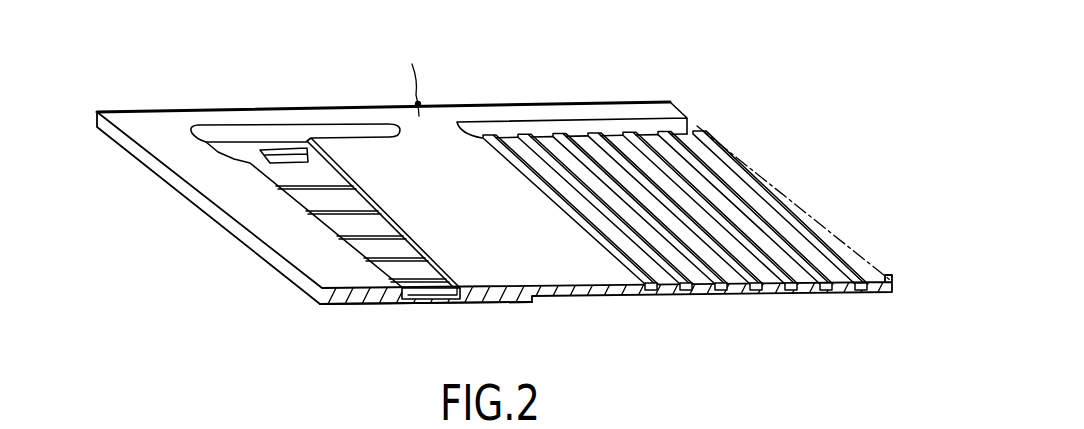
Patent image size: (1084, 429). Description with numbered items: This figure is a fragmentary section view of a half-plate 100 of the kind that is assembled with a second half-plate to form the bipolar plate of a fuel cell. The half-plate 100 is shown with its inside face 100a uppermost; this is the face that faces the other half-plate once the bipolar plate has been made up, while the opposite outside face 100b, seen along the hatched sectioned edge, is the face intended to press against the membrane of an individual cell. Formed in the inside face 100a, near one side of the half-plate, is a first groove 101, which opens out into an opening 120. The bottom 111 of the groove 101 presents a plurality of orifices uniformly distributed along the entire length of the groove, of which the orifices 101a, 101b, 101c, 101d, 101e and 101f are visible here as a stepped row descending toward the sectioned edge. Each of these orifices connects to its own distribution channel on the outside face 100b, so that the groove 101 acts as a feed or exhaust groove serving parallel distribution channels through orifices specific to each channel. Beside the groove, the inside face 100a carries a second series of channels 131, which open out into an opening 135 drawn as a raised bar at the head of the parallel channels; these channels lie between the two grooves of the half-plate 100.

The half-plate 100 is at (113, 85).
The inside face 100a is at (405, 76).
The outside face 100b is at (373, 314).
The first groove 101 is at (457, 298).
The orifice 101a is at (307, 163).
The orifice 101b is at (303, 190).
The orifice 101c is at (338, 213).
The orifice 101d is at (358, 239).
The orifice 101e is at (396, 262).
The orifice 101f is at (402, 280).
The bottom of the groove 111 is at (423, 297).
The opening 120 is at (243, 135).
The second series of channels 131 is at (515, 140).
The opening 135 is at (578, 128).